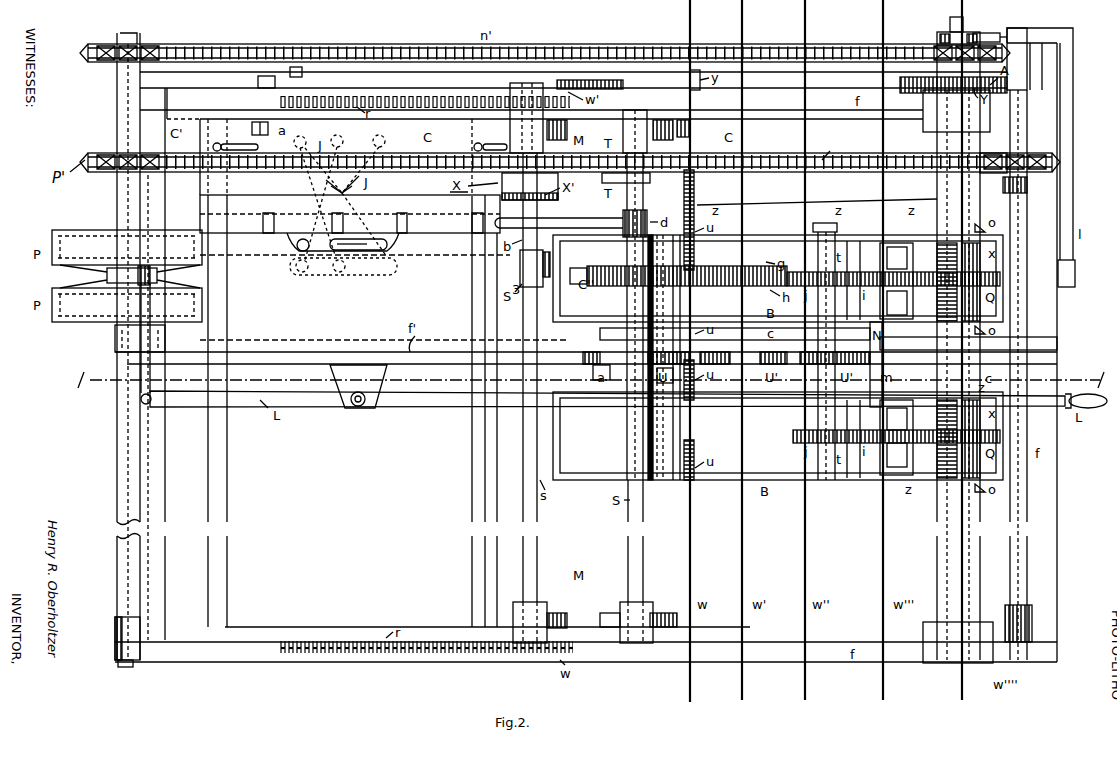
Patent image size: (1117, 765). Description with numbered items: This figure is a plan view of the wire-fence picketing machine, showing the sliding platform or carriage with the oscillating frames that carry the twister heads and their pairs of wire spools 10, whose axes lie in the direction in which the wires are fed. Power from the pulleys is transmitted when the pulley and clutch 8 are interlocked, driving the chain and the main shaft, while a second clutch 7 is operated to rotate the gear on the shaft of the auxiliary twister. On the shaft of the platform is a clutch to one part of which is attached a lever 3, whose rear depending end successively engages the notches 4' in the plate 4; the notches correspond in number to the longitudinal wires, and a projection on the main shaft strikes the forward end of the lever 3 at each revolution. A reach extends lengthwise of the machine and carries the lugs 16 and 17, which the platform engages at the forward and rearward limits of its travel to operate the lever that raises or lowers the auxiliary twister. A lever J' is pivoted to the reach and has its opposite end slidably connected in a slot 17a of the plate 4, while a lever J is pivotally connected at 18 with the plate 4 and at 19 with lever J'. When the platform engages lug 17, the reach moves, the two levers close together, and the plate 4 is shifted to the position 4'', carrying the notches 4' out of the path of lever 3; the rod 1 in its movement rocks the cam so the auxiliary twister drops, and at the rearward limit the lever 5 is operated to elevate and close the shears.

The rod 1 is at (775, 162).
The lever 3 is at (567, 224).
The plate 4 is at (350, 223).
The notches in the plate 4' is at (363, 223).
The shifted position of the plate 4'' is at (375, 259).
The lever 5 is at (258, 85).
The clutch 7 is at (963, 25).
The clutch 8 is at (107, 275).
The wire spools 10 is at (897, 357).
The lug 16 is at (298, 143).
The lug 17 is at (263, 109).
The slot of the plate 17a is at (363, 250).
The pivot connection 18 is at (297, 251).
The pivot connection 19 is at (336, 190).